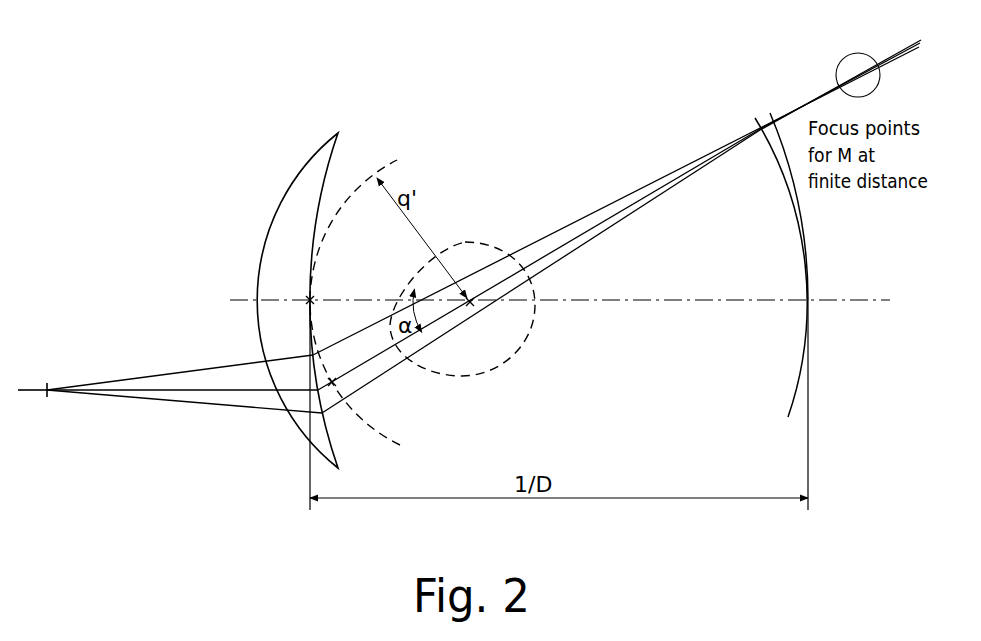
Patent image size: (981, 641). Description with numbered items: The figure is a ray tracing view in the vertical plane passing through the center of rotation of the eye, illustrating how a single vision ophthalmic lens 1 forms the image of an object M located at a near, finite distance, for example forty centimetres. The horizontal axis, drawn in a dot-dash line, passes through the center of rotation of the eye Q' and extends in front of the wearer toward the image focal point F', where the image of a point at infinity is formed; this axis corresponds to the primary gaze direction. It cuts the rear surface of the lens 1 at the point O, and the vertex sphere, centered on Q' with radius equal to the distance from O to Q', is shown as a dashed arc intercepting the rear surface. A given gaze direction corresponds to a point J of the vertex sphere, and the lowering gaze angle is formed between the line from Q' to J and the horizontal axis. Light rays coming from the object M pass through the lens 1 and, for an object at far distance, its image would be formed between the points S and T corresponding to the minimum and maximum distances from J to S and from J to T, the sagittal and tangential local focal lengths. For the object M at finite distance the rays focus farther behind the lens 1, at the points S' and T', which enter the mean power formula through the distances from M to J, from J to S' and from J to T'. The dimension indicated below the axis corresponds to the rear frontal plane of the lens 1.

The single vision ophthalmic lens 1 is at (290, 420).
The object point M is at (35, 406).
The point of intersection of the rear surface and axis CRE-F' O is at (299, 288).
The point of the vertex sphere J is at (339, 386).
The center of rotation of the eye Q' is at (476, 287).
The tangential focus point T is at (767, 264).
The sagittal focus point S is at (786, 194).
The tangential focus point for near object T' is at (840, 85).
The sagittal focus point for near object S' is at (860, 66).
The image focal point F' is at (793, 393).